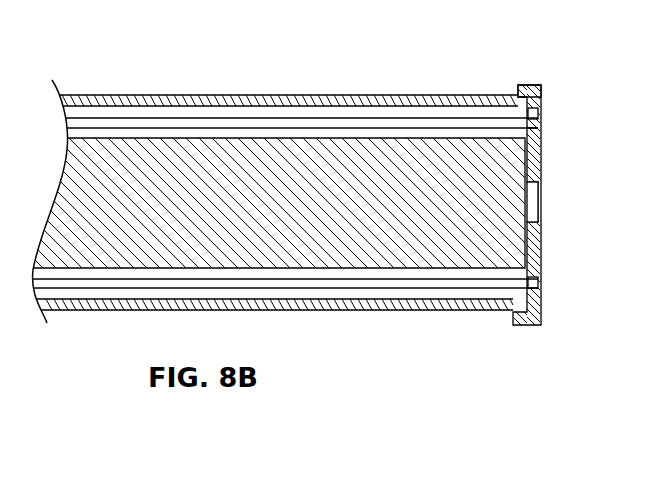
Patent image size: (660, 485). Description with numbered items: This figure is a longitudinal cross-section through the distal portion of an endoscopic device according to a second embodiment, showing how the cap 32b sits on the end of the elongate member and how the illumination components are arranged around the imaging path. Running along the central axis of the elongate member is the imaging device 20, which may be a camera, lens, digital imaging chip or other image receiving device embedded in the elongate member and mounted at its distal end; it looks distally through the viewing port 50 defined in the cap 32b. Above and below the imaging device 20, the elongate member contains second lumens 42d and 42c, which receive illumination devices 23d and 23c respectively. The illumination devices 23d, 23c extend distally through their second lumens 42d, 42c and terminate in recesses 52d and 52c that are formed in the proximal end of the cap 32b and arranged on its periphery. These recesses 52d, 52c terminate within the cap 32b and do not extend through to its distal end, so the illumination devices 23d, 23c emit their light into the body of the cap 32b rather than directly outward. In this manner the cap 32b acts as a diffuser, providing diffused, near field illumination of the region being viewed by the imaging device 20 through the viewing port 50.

The imaging device 20 is at (538, 197).
The viewing port 50 is at (538, 222).
The cap 32b is at (533, 84).
The recess 52d is at (542, 113).
The recess 52c is at (538, 272).
The illumination device 23d is at (395, 117).
The illumination device 23c is at (403, 290).
The second lumen 42d is at (457, 113).
The second lumen 42c is at (457, 293).